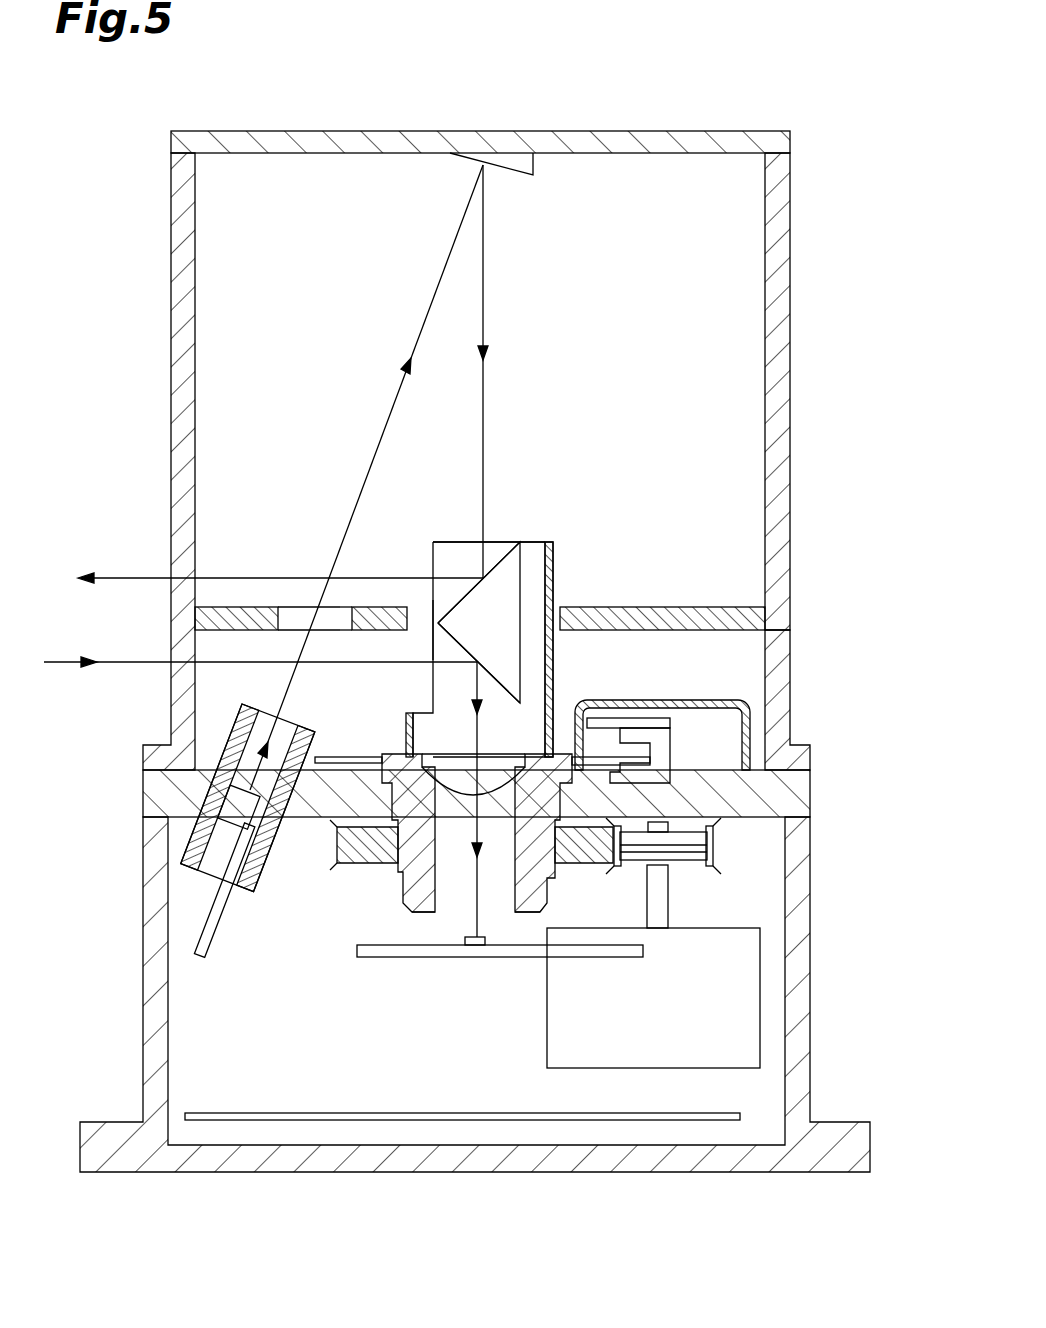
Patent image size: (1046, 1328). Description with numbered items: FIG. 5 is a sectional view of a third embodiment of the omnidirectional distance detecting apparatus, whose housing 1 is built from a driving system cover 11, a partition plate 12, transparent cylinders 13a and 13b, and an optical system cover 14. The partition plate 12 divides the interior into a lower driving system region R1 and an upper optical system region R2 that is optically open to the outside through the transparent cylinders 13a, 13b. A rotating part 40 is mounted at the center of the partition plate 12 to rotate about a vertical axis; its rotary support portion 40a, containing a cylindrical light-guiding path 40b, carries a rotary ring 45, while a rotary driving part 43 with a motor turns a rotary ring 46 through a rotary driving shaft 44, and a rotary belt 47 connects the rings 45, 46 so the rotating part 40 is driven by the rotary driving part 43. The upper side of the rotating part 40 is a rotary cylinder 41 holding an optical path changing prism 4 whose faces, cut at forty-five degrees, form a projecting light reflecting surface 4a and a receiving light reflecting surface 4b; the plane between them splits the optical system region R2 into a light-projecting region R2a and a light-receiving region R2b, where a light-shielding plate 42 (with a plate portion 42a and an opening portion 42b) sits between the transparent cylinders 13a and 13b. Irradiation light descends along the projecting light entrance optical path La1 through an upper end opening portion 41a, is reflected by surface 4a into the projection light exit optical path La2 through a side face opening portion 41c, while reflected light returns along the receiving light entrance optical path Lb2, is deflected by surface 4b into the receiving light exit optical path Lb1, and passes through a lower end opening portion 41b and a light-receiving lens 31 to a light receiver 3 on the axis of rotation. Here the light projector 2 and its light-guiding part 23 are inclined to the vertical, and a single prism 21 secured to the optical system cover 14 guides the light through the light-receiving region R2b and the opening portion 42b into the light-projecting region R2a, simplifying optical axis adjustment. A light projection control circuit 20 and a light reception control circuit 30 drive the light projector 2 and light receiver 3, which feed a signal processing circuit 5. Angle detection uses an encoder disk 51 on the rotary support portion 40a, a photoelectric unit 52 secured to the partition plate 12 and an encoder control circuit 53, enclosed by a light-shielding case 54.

The housing 1 is at (786, 122).
The light projector 2 is at (201, 820).
The light receiver 3 is at (462, 940).
The optical path changing prism 4 is at (486, 584).
The projecting light reflecting surface 4a is at (470, 585).
The receiving light reflecting surface 4b is at (445, 660).
The signal processing circuit 5 is at (315, 1113).
The driving system cover 11 is at (805, 1005).
The partition plate 12 is at (810, 800).
The transparent cylinder 13a is at (790, 415).
The transparent cylinder 13b is at (790, 650).
The optical system cover 14 is at (692, 132).
The light projection control circuit 20 is at (270, 931).
The prism 21 is at (511, 163).
The light-guiding part 23 is at (134, 810).
The light reception control circuit 30 is at (405, 960).
The light-receiving lens 31 is at (468, 790).
The rotating part 40 is at (465, 792).
The rotary support portion 40a is at (405, 877).
The cylindrical light-guiding path 40b is at (500, 895).
The rotary cylinder 41 is at (487, 604).
The upper end opening portion 41a is at (497, 540).
The lower end opening portion 41b is at (410, 740).
The side face opening portion 41c is at (430, 630).
The light-shielding plate 42 is at (680, 605).
The partition plate portion 42a is at (412, 617).
The opening portion 42b is at (284, 614).
The rotary driving part 43 is at (565, 1012).
The rotary driving shaft 44 is at (665, 905).
The rotary ring 45 is at (585, 855).
The rotary ring 46 is at (700, 820).
The rotary belt 47 is at (683, 857).
The encoder disk 51 is at (345, 757).
The photoelectric unit 52 is at (665, 757).
The encoder control circuit 53 is at (635, 718).
The light-shielding case 54 is at (710, 700).
The projecting light entrance optical path La1 is at (483, 420).
The projection light exit optical path La2 is at (125, 578).
The receiving light exit optical path Lb1 is at (480, 735).
The receiving light entrance optical path Lb2 is at (100, 663).
The driving system region R1 is at (770, 910).
The optical system region R2 is at (655, 188).
The light-projecting region R2a is at (760, 525).
The light-receiving region R2b is at (760, 695).